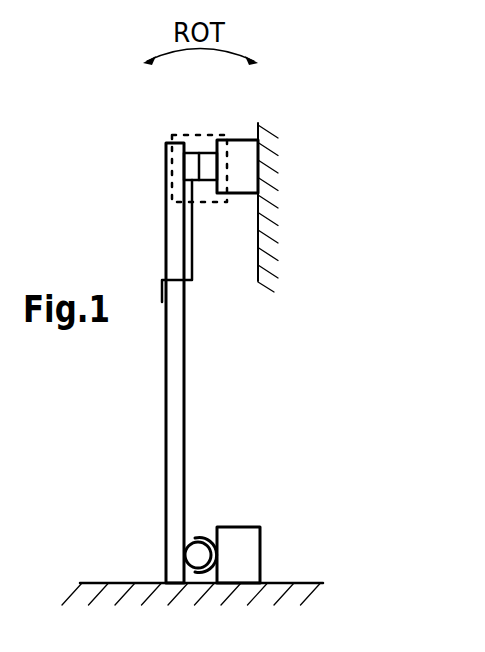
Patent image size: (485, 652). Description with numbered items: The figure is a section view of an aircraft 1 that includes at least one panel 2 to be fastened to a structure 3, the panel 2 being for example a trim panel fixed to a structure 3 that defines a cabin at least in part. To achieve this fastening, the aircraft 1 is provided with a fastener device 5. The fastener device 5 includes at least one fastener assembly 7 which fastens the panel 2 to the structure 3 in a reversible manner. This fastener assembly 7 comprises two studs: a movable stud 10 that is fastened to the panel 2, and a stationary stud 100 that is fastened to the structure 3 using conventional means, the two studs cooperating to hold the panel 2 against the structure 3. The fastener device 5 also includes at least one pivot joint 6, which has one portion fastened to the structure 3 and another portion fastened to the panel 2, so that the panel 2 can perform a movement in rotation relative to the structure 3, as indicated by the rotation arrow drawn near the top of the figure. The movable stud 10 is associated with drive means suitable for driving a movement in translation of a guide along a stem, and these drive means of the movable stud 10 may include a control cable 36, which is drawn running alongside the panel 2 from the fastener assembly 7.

The aircraft 1 is at (352, 204).
The panel 2 is at (167, 381).
The structure 3 is at (266, 276).
The fastener device 5 is at (197, 100).
The pivot joint 6 is at (207, 504).
The fastener assembly 7 is at (211, 215).
The movable stud 10 is at (192, 128).
The control cable 36 is at (192, 267).
The stationary stud 100 is at (210, 128).